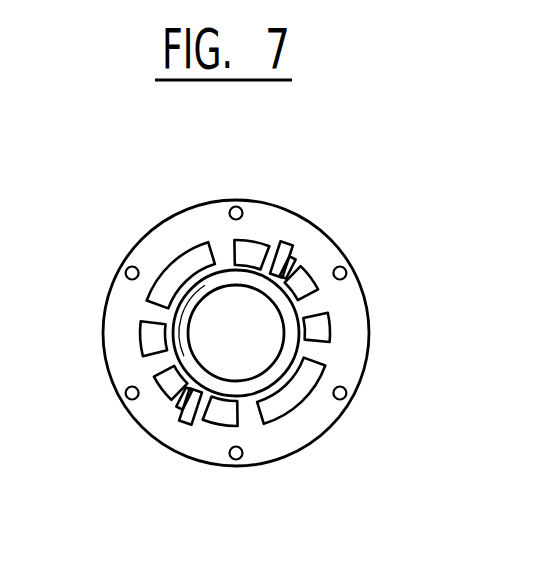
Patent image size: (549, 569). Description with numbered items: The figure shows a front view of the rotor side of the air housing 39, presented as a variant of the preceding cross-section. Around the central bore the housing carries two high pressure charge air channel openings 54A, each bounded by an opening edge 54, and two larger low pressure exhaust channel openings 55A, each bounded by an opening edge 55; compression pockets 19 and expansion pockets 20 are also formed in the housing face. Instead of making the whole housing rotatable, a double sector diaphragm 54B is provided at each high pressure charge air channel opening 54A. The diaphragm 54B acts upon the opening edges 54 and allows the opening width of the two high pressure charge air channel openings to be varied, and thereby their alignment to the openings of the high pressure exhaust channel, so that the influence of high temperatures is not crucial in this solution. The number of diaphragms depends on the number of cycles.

The air housing 39 is at (258, 440).
The compression pockets 19 is at (253, 247).
The expansion pockets 20 is at (150, 335).
The opening edge 54 is at (307, 270).
The high pressure charge air channel openings 54A is at (298, 270).
The double sector diaphragm 54B is at (295, 248).
The opening edge 55 is at (162, 272).
The low pressure exhaust channel openings 55A is at (193, 260).